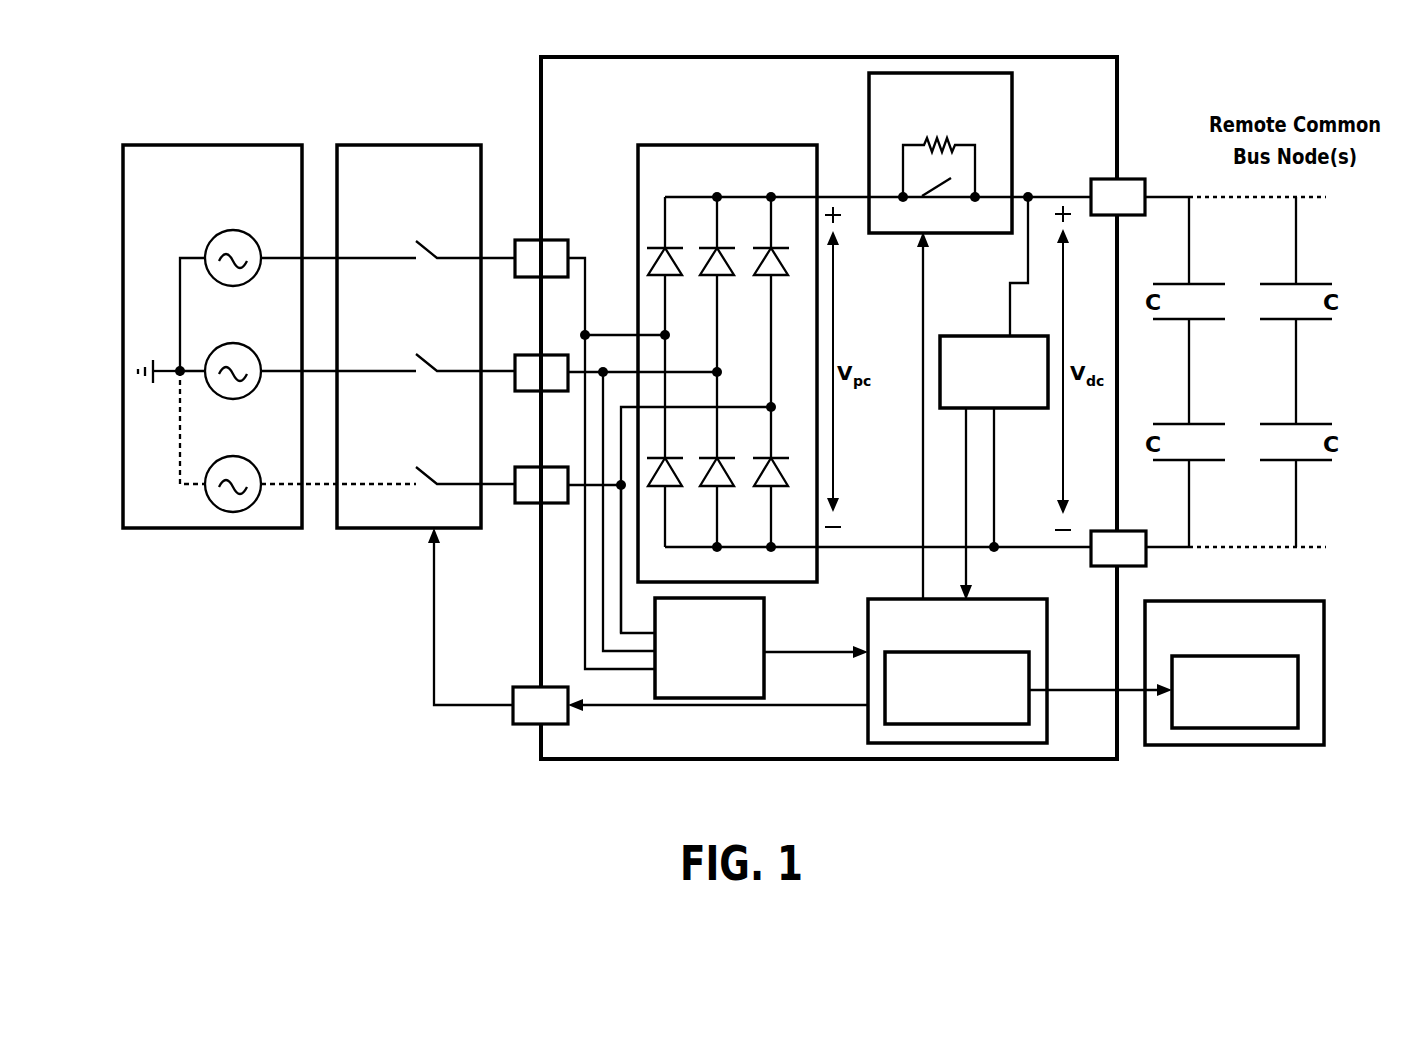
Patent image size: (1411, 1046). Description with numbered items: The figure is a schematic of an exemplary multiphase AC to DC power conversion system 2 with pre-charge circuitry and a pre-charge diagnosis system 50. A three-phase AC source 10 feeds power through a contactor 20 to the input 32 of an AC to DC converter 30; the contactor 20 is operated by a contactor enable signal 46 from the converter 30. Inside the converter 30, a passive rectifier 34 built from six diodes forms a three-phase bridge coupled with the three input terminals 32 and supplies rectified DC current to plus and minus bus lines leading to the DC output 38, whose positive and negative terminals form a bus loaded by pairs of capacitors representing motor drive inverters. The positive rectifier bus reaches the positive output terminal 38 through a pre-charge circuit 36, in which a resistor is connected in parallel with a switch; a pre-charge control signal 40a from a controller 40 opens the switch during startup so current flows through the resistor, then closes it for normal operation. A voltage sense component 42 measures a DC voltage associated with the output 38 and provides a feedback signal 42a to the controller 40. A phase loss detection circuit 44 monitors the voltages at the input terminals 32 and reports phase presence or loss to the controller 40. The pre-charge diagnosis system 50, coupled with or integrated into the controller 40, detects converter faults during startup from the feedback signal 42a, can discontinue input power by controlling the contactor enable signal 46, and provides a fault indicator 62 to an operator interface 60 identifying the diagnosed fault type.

The multiphase AC to DC power conversion system 2 is at (215, 55).
The AC source 10 is at (123, 165).
The contactor 20 is at (401, 145).
The AC to DC converter 30 is at (541, 84).
The input 32 is at (524, 503).
The rectifier 34 is at (638, 165).
The pre-charge circuit 36 is at (872, 100).
The DC output 38 is at (1141, 580).
The controller 40 is at (868, 680).
The pre-charge control signal 40a is at (921, 460).
The voltage sense component 42 is at (990, 336).
The feedback signal 42a is at (968, 567).
The phase loss detection circuit 44 is at (764, 620).
The contactor enable signal 46 is at (528, 724).
The pre-charge diagnosis system 50 is at (1029, 676).
The operator interface 60 is at (1324, 622).
The fault indicator 62 is at (1298, 690).